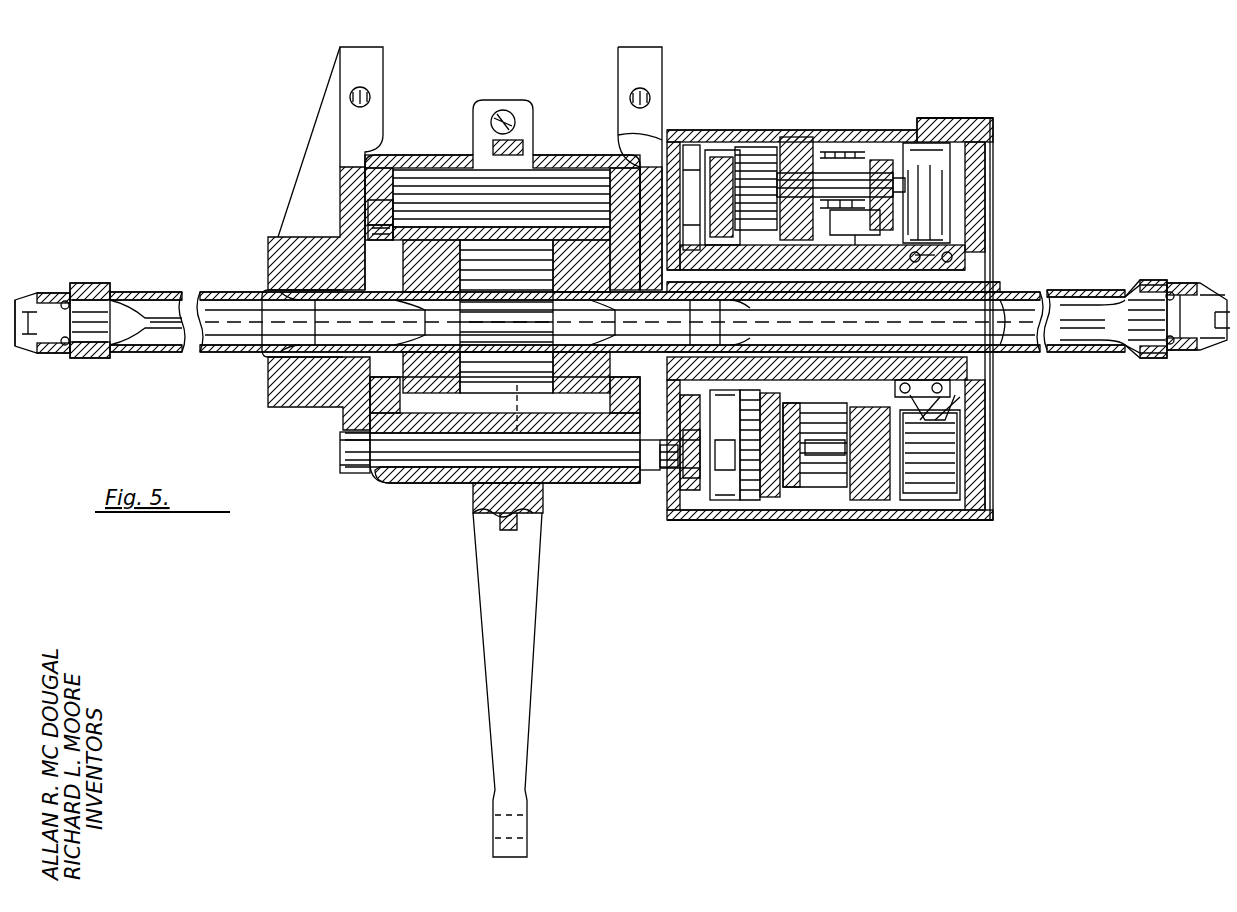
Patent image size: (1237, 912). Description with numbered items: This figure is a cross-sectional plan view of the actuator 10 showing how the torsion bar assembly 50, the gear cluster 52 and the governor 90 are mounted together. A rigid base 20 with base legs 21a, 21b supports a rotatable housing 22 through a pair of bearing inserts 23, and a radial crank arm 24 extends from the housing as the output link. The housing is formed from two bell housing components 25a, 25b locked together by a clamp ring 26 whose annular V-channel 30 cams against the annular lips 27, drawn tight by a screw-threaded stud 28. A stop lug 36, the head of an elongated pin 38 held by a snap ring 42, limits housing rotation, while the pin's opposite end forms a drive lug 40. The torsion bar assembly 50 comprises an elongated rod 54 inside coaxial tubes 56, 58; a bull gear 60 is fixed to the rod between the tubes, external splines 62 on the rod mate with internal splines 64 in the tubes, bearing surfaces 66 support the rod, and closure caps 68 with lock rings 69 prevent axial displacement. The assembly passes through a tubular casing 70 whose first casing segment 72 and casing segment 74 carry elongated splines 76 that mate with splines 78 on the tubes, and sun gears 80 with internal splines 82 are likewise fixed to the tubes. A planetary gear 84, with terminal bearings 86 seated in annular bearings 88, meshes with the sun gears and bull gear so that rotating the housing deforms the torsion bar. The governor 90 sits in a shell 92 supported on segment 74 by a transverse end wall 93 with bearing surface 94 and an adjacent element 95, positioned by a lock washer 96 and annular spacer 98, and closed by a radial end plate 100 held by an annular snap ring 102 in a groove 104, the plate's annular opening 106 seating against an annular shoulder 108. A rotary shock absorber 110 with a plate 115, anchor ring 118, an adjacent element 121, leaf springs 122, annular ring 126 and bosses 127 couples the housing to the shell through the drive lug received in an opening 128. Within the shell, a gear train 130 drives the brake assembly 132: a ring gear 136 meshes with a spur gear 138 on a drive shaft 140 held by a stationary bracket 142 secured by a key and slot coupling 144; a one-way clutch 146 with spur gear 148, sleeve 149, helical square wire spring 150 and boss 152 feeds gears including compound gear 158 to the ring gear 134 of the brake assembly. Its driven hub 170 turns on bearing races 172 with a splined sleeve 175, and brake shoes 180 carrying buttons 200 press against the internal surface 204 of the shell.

The actuator 10 is at (258, 152).
The base 20 is at (265, 232).
The base leg 21a is at (352, 118).
The base leg 21b is at (655, 95).
The rotatable housing 22 is at (420, 480).
The bearing inserts 23 is at (372, 383).
The radial crank arm 24 is at (520, 665).
The bell housing component 25a is at (448, 155).
The bell housing component 25b is at (548, 155).
The clamp ring 26 is at (540, 505).
The annular lips 27 is at (492, 140).
The screw-threaded stud 28 is at (503, 110).
The annular V-channel 30 is at (478, 495).
The stop lug 36 is at (342, 452).
The elongated pin 38 is at (385, 465).
The drive lug 40 is at (672, 470).
The snap ring 42 is at (650, 472).
The torsion bar assembly 50 is at (230, 360).
The gear cluster 52 is at (385, 182).
The elongated rod 54 is at (158, 312).
The tube 56 is at (150, 352).
The tube 58 is at (1090, 350).
The bull gear 60 is at (522, 390).
The external splines 62 is at (90, 345).
The internal splines 64 is at (103, 293).
The bearing surfaces 66 is at (506, 316).
The closure caps 68 is at (45, 296).
The lock rings 69 is at (62, 343).
The tubular casing 70 is at (312, 230).
The first casing segment 72 is at (282, 375).
The casing segment 74 is at (685, 322).
The elongated splines 76 is at (520, 322).
The splines 78 is at (521, 322).
The sun gears 80 is at (440, 385).
The internal splines 82 is at (400, 312).
The planetary gear 84 is at (560, 185).
The terminal bearings 86 is at (378, 228).
The annular bearings 88 is at (378, 212).
The governor 90 is at (970, 515).
The shell 92 is at (810, 470).
The transverse end wall 93 is at (695, 505).
The bearing surface 94 is at (726, 445).
The bearing 95 is at (728, 445).
The lock washer 96 is at (778, 180).
The annular spacer 98 is at (778, 198).
The radial end plate 100 is at (980, 178).
The annular snap ring 102 is at (992, 135).
The groove 104 is at (975, 122).
The annular opening 106 is at (985, 265).
The annular shoulder 108 is at (992, 390).
The rotary shock absorber 110 is at (667, 135).
The plate 115 is at (685, 485).
The anchor ring 118 is at (632, 95).
The bracket foot 121 is at (670, 175).
The leaf springs 122 is at (692, 185).
The annular ring 126 is at (732, 449).
The bosses 127 is at (700, 470).
The opening 128 is at (750, 502).
The gear train 130 is at (830, 500).
The brake assembly 132 is at (950, 510).
The ring gear 134 is at (878, 500).
The ring gear 136 is at (730, 165).
The spur gear 138 is at (742, 150).
The drive shaft 140 is at (733, 150).
The stationary bracket 142 is at (672, 135).
The key and slot coupling 144 is at (808, 285).
The one-way clutch 146 is at (860, 200).
The spur gear 148 is at (796, 140).
The sleeve 149 is at (833, 150).
The helical square wire spring 150 is at (850, 152).
The boss 152 is at (882, 165).
The compound gear 158 is at (920, 520).
The driven hub 170 is at (935, 420).
The bearing races 172 is at (950, 392).
The splined sleeve 175 is at (898, 250).
The brake shoes 180 is at (940, 150).
The buttons 200 is at (935, 140).
The internal surface 204 is at (980, 520).